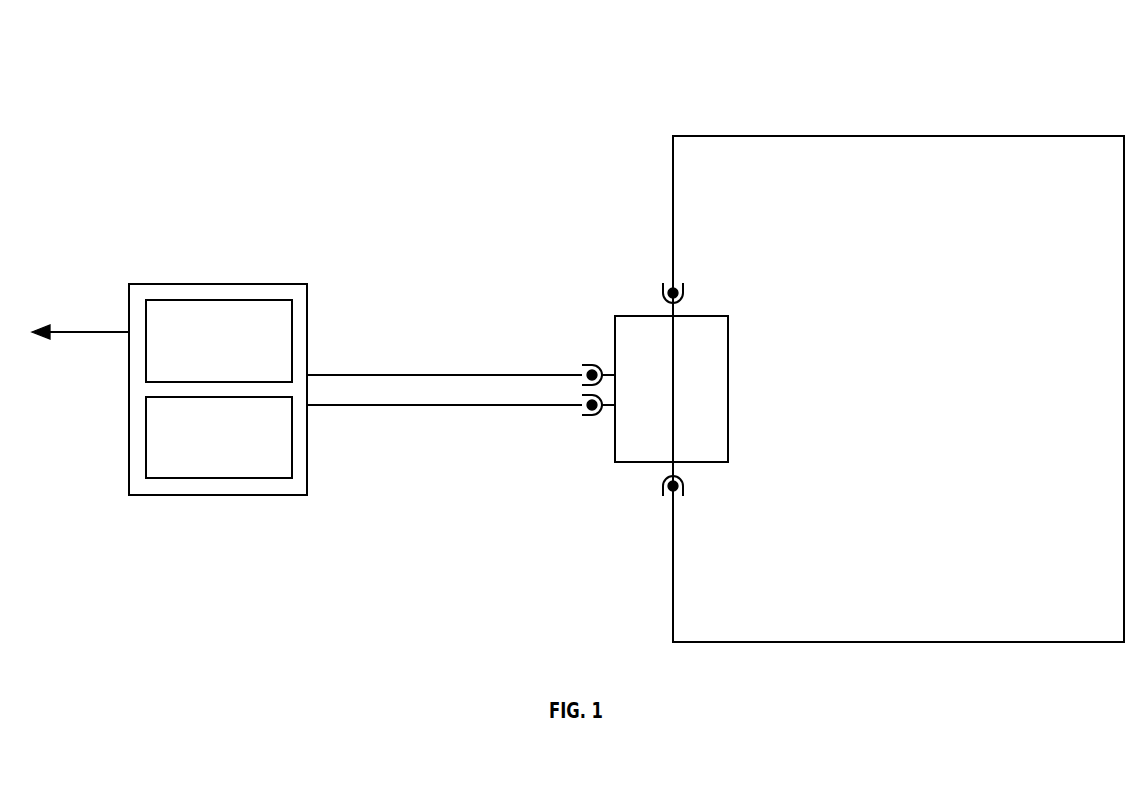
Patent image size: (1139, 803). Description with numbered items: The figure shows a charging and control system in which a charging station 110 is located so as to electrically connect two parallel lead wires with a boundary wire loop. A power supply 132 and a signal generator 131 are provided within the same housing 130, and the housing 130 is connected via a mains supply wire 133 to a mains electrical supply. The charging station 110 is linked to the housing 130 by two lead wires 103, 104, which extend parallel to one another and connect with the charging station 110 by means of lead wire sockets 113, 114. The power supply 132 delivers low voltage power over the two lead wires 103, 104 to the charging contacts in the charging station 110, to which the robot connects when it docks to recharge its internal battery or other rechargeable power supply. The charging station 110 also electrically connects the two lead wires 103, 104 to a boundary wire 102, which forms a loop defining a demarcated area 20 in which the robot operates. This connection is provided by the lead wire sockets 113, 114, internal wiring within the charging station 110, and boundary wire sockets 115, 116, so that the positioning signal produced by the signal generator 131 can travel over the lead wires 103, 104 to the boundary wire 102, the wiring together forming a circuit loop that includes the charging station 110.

The demarcated area 20 is at (885, 399).
The boundary wire 102 is at (929, 132).
The lead wire 103 is at (436, 374).
The lead wire 104 is at (433, 407).
The charging station 110 is at (658, 398).
The lead wire socket 113 is at (592, 362).
The lead wire socket 114 is at (592, 420).
The boundary wire socket 115 is at (688, 293).
The boundary wire socket 116 is at (685, 489).
The housing 130 is at (227, 284).
The signal generator 131 is at (205, 348).
The power supply 132 is at (205, 447).
The mains supply wire 133 is at (82, 332).